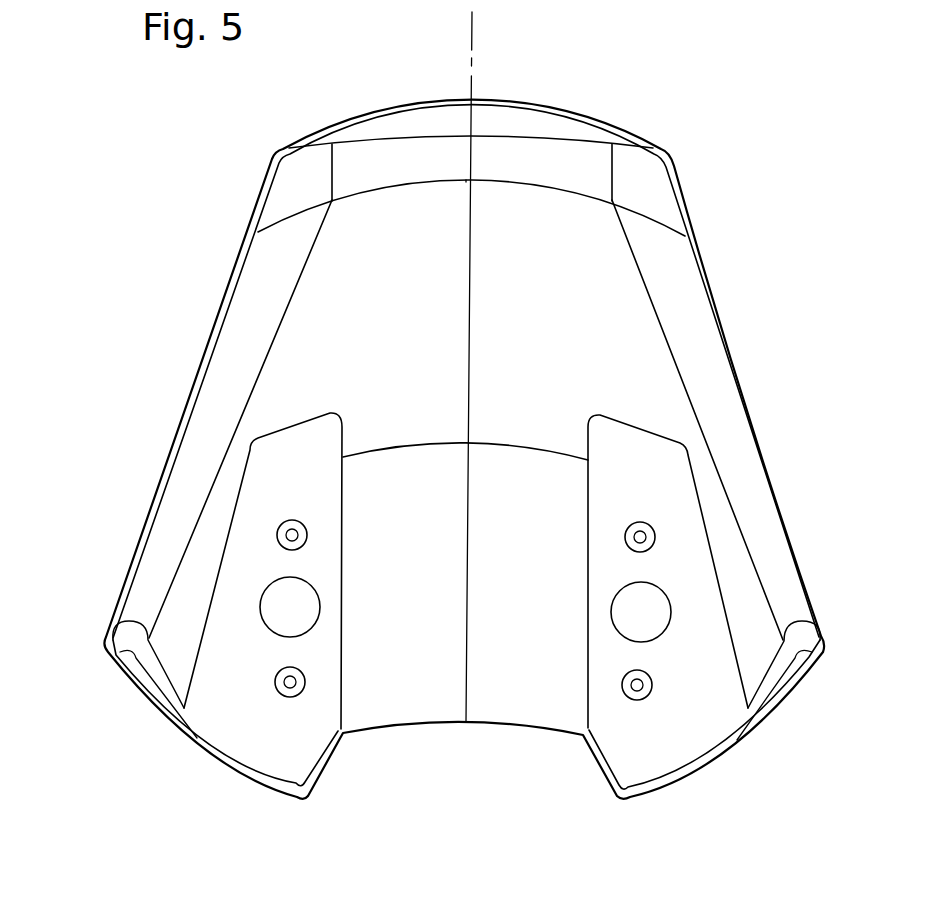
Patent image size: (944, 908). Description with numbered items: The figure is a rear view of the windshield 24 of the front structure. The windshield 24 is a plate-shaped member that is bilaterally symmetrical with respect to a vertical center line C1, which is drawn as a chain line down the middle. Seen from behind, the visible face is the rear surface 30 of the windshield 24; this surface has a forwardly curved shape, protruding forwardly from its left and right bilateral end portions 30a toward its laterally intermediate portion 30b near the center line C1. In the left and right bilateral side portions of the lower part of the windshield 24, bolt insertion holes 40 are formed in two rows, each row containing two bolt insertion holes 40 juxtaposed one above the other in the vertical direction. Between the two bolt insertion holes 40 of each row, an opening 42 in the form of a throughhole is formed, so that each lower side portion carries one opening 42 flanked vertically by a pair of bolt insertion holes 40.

The windshield 24 is at (700, 183).
The center line C1 is at (474, 38).
The rear surface 30 is at (567, 150).
The bilateral end portion 30a is at (167, 470).
The intermediate portion 30b is at (470, 227).
The bolt insertion hole 40 is at (285, 526).
The opening 42 is at (310, 618).